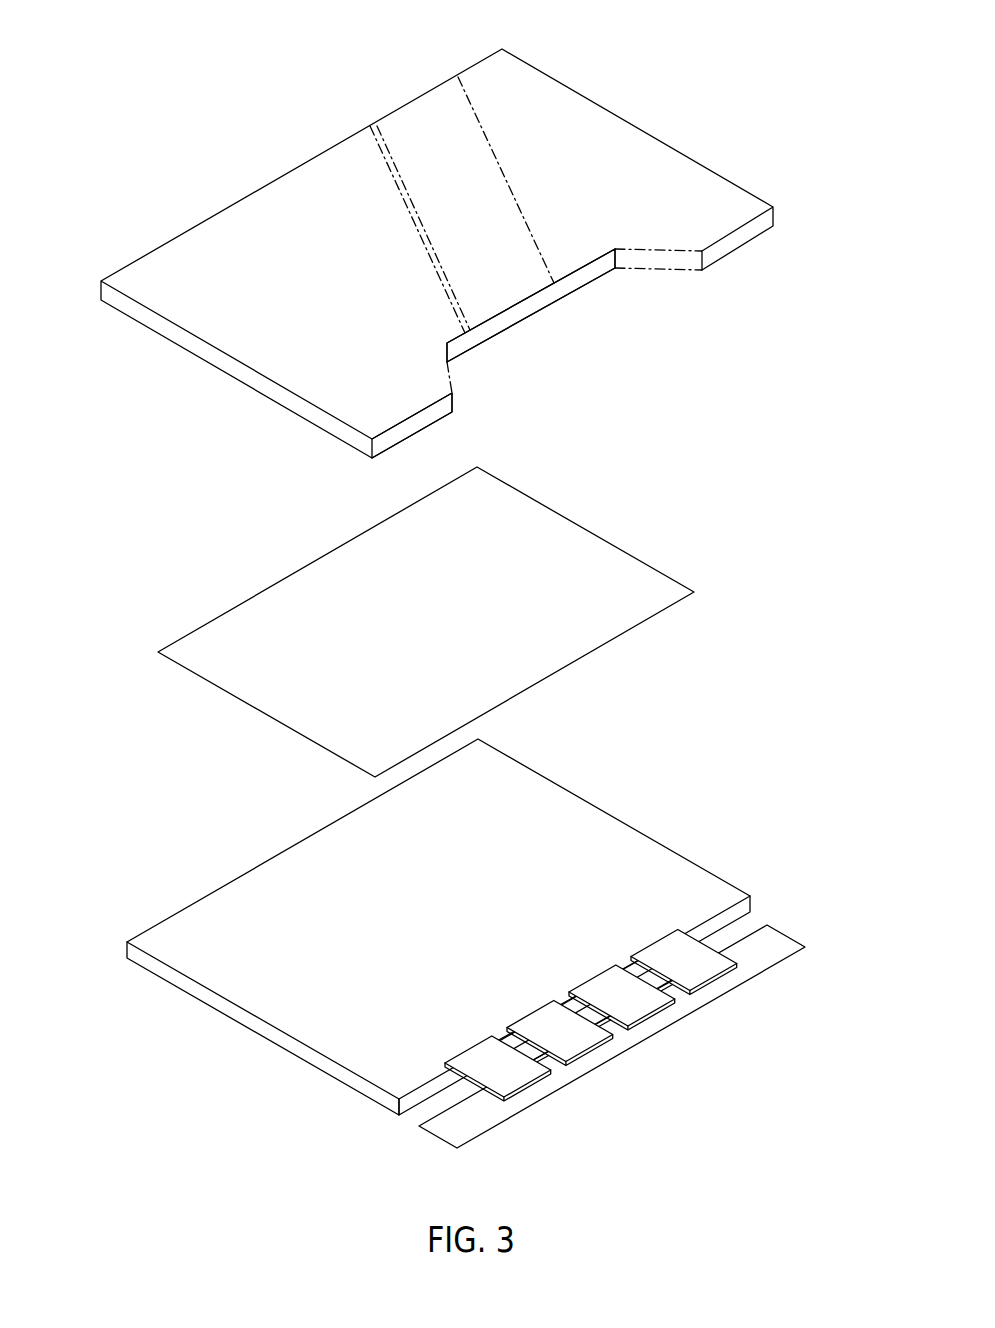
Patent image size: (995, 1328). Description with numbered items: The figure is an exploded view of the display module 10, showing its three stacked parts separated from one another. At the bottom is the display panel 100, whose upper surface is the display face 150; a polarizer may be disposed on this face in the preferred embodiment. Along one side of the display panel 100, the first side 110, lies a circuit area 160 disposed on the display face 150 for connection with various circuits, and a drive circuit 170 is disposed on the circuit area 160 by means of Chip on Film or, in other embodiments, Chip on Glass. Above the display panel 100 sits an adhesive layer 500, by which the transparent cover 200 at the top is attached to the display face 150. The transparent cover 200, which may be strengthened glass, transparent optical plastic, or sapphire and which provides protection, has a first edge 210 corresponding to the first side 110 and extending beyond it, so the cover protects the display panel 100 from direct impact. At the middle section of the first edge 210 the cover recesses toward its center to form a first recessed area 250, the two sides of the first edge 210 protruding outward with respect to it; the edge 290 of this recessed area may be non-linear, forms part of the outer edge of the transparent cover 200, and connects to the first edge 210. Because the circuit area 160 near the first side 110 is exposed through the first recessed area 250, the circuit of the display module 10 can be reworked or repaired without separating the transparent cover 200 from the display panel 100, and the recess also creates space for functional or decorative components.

The display module 10 is at (208, 63).
The display panel 100 is at (225, 884).
The first side 110 is at (412, 1103).
The display face 150 is at (165, 930).
The circuit area 160 is at (590, 1007).
The drive circuit 170 is at (520, 1078).
The transparent cover 200 is at (550, 78).
The first edge 210 is at (390, 443).
The first recessed area 250 is at (636, 324).
The edge of the recessed area 290 is at (538, 307).
The adhesive layer 500 is at (192, 633).